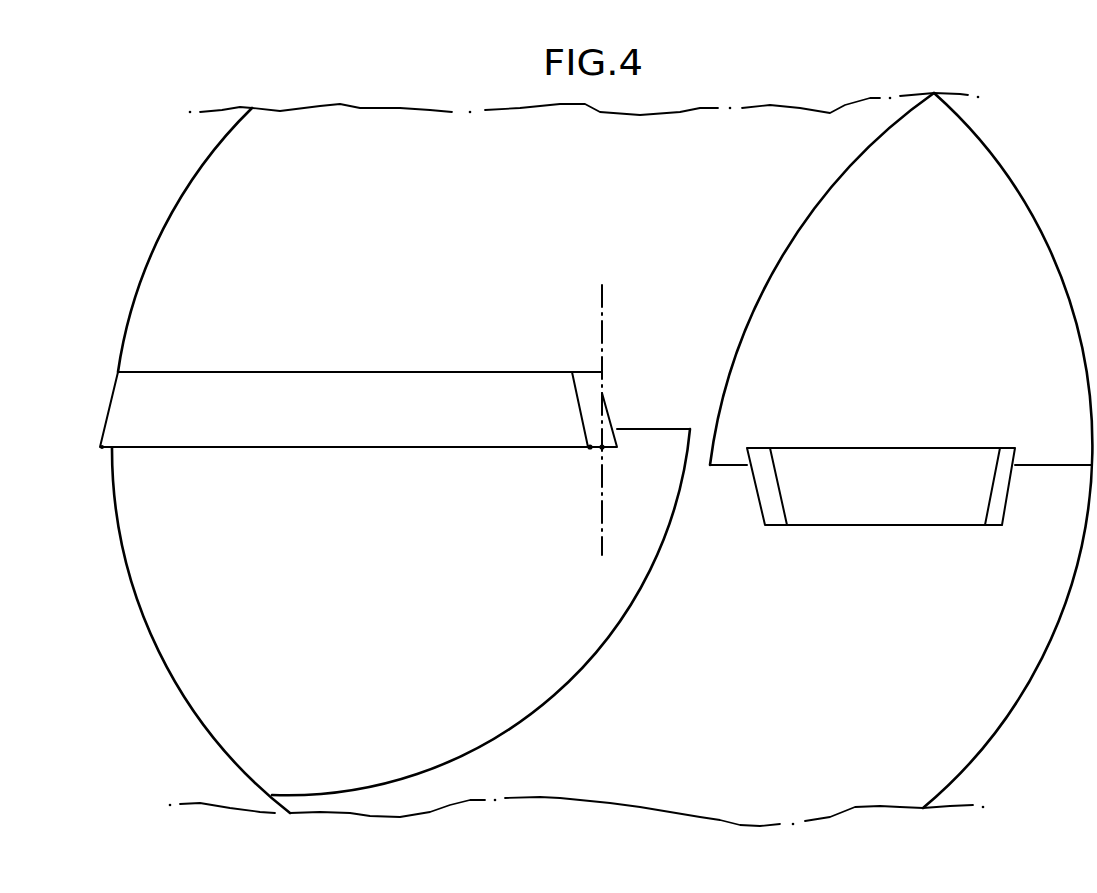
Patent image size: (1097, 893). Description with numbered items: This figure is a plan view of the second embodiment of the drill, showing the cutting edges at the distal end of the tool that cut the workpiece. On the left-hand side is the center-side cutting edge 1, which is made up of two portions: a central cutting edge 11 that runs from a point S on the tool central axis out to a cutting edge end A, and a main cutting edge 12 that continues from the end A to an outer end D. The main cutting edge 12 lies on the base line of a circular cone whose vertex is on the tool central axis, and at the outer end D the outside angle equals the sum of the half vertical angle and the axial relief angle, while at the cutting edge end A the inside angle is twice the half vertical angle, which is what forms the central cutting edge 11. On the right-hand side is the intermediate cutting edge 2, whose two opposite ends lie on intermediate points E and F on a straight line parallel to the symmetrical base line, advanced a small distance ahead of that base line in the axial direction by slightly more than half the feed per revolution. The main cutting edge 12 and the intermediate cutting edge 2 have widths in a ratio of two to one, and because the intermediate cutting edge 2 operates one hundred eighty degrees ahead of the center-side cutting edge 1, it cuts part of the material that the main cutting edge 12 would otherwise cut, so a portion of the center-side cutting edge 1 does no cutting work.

The center-side cutting edge 1 is at (358, 496).
The central cutting edge 11 is at (596, 449).
The main cutting edge 12 is at (345, 448).
The intermediate cutting edge 2 is at (881, 441).
The cutting edge end A is at (590, 447).
The point on tool central axis S is at (602, 447).
The outer end D is at (100, 448).
The intermediate point E is at (772, 448).
The intermediate point F is at (1000, 448).